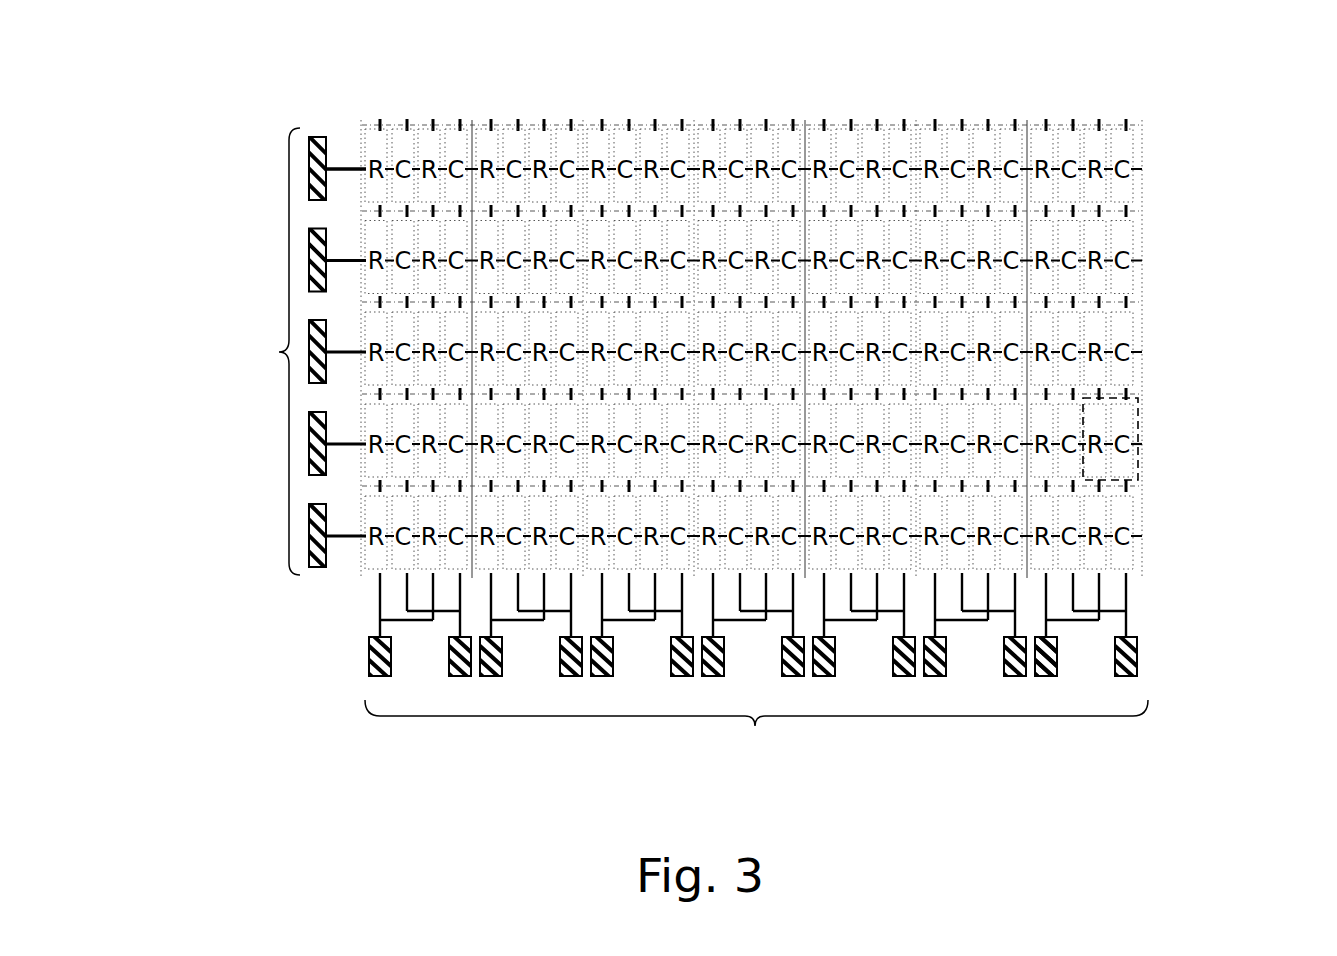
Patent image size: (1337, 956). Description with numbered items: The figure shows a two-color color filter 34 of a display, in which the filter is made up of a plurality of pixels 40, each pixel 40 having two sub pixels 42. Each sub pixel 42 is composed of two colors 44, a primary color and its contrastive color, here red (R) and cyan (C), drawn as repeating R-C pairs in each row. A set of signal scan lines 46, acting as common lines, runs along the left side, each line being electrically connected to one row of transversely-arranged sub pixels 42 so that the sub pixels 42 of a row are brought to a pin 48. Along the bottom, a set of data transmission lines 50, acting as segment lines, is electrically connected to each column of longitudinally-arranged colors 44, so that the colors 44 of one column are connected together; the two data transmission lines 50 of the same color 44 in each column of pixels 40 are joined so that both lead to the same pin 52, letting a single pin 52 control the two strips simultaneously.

The color filter 34 is at (337, 642).
The pixel 40 is at (1140, 242).
The sub pixel 42 is at (1138, 455).
The color 44 is at (1123, 372).
The signal scan lines 46 is at (387, 9).
The pin 48 is at (312, 178).
The data transmission lines 50 is at (838, 690).
The pin 52 is at (1055, 658).